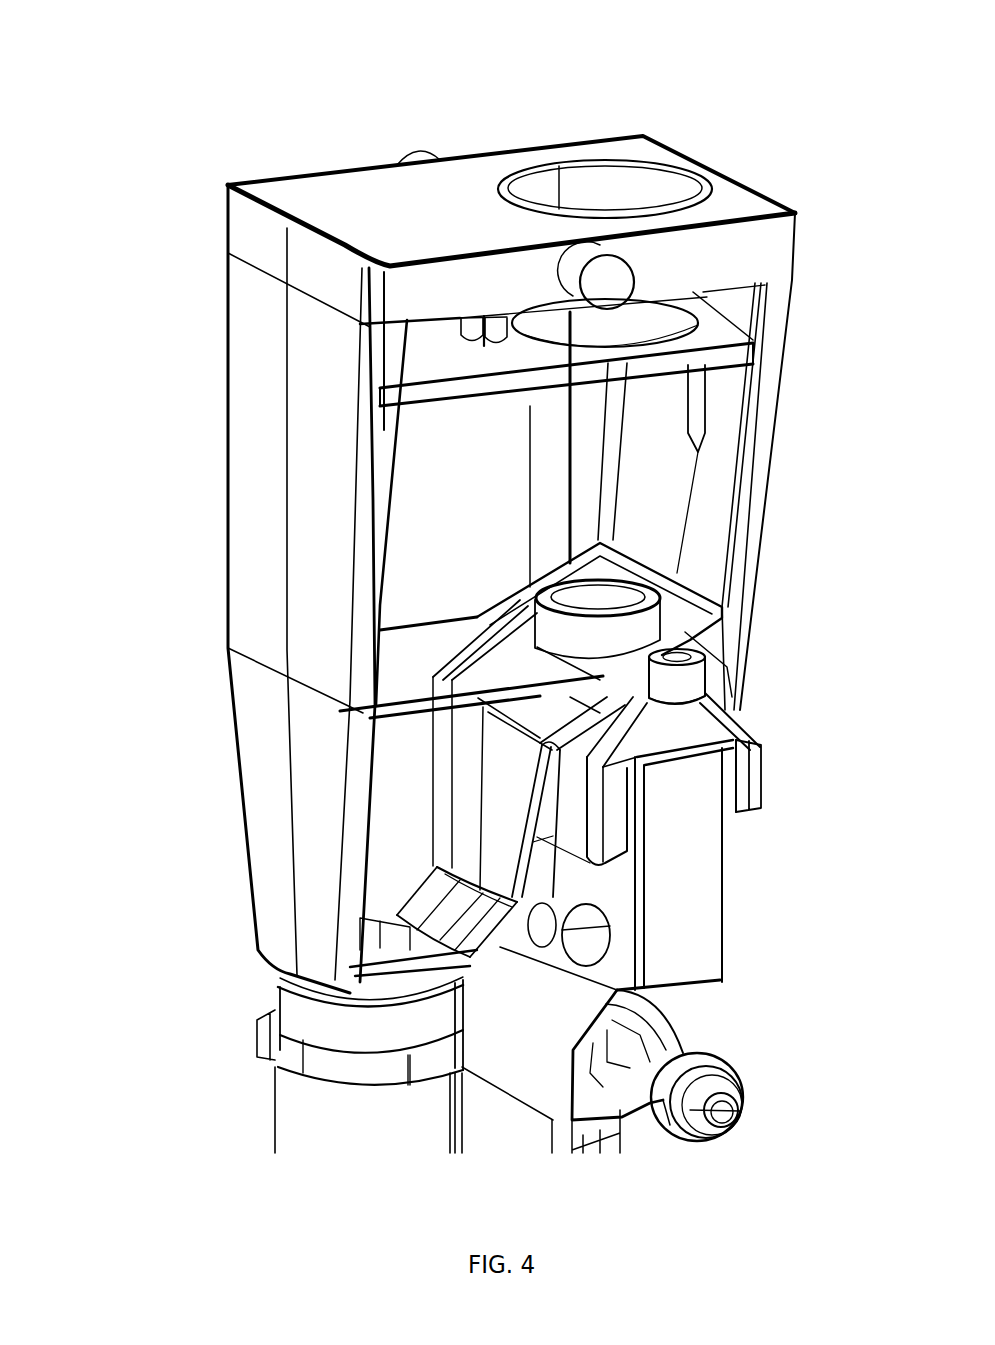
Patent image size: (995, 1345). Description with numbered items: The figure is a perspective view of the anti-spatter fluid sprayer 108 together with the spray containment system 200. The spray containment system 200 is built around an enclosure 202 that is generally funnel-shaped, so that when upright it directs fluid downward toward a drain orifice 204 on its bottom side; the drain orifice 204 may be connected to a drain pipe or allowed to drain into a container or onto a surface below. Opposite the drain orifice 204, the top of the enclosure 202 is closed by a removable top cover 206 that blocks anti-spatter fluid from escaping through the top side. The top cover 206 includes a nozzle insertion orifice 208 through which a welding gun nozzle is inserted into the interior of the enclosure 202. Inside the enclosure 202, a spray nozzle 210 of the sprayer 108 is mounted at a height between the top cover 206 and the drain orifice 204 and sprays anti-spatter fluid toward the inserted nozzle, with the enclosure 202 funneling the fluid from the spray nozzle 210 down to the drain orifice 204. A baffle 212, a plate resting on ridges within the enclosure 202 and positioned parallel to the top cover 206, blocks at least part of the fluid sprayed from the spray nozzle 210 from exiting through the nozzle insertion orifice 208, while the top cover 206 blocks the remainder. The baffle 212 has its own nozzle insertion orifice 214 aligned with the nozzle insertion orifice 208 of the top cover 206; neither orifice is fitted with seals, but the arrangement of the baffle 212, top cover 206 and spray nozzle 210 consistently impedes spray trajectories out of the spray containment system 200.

The anti-spatter fluid sprayer 108 is at (86, 37).
The spray containment system 200 is at (208, 185).
The enclosure 202 is at (225, 281).
The drain orifice 204 is at (357, 935).
The top cover 206 is at (316, 193).
The nozzle insertion orifice 208 is at (567, 166).
The spray nozzle 210 is at (533, 588).
The baffle 212 is at (418, 400).
The nozzle insertion orifice 214 is at (588, 360).